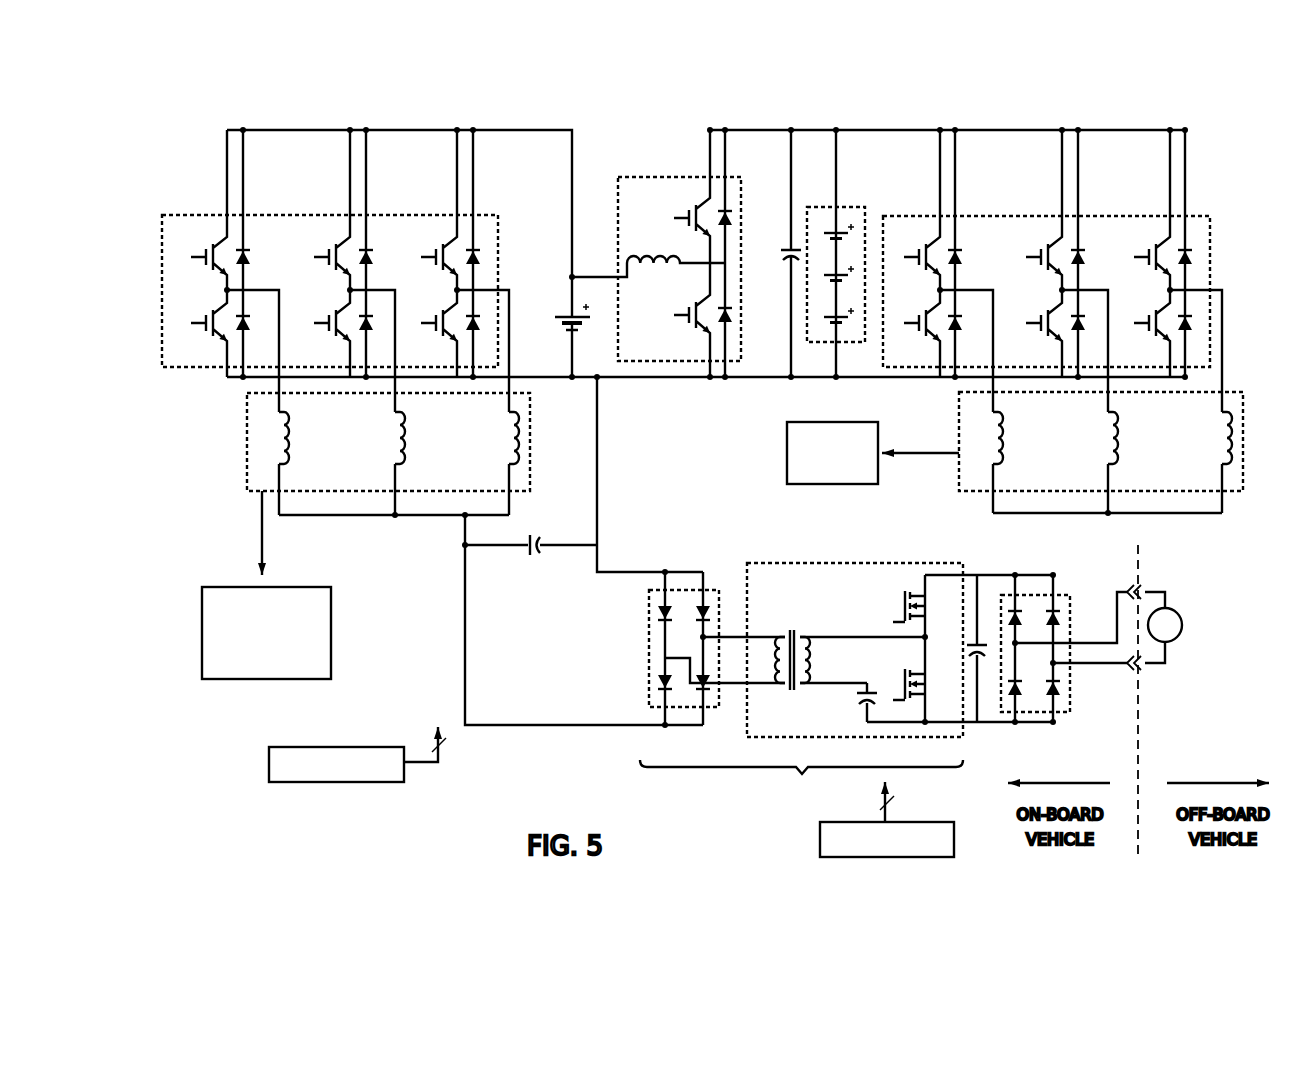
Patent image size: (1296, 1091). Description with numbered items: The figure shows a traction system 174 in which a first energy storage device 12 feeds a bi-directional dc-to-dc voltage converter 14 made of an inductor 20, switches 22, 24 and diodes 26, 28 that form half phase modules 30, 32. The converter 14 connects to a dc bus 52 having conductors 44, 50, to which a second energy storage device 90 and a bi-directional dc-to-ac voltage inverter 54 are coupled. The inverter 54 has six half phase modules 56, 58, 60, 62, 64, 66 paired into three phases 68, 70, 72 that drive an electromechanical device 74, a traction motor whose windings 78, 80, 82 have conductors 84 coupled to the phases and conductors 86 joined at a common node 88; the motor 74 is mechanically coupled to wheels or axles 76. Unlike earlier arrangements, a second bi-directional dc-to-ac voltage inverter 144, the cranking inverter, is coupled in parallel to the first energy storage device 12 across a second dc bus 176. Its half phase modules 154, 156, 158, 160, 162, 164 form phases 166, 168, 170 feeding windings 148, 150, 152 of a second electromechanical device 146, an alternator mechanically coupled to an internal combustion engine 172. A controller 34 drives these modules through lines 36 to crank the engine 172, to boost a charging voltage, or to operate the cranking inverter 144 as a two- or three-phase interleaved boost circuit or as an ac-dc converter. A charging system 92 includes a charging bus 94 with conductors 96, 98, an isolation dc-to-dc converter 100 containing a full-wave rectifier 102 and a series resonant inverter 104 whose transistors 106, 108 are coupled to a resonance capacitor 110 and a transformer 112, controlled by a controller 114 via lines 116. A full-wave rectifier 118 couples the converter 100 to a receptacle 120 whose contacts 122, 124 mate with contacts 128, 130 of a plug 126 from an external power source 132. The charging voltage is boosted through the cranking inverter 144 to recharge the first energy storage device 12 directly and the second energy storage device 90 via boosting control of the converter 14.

The first energy storage device 12 is at (563, 312).
The bi-directional dc-to-dc voltage converter 14 is at (675, 253).
The inductor 20 is at (653, 257).
The switch 22 is at (672, 218).
The switch 24 is at (672, 315).
The diode 26 is at (730, 222).
The diode 28 is at (732, 320).
The half phase module 30 is at (675, 210).
The half phase module 32 is at (674, 329).
The controller 34 is at (269, 765).
The lines 36 is at (423, 764).
The conductor 44 is at (900, 130).
The conductor 50 is at (853, 377).
The dc bus 52 is at (947, 253).
The bi-directional dc-to-ac voltage inverter 54 is at (1046, 269).
The half phase module 56 is at (930, 232).
The half phase module 58 is at (927, 298).
The half phase module 60 is at (1050, 232).
The half phase module 62 is at (1049, 299).
The half phase module 64 is at (1160, 232).
The half phase module 66 is at (1157, 298).
The phase 68 is at (949, 269).
The phase 70 is at (1065, 269).
The phase 72 is at (1175, 269).
The electromechanical device 74 is at (1080, 466).
The driving wheels or axles 76 is at (787, 455).
The winding 78 is at (1002, 445).
The winding 80 is at (1116, 443).
The winding 82 is at (1216, 422).
The conductors 84 is at (997, 410).
The conductors 86 is at (997, 489).
The common node 88 is at (1050, 513).
The second energy storage device 90 is at (830, 207).
The charging system 92 is at (427, 655).
The charging bus 94 is at (470, 530).
The conductor 96 is at (597, 572).
The conductor 98 is at (467, 573).
The isolation dc-to-dc converter 100 is at (839, 669).
The full-wave rectifier 102 is at (649, 598).
The inverter 104 is at (900, 635).
The transistor 106 is at (903, 620).
The transistor 108 is at (893, 695).
The resonance capacitor 110 is at (862, 704).
The transformer 112 is at (804, 635).
The controller 114 is at (954, 842).
The lines 116 is at (896, 803).
The full-wave rectifier 118 is at (1070, 596).
The receptacle 120 is at (1078, 650).
The contact 122 is at (1128, 590).
The contact 124 is at (1129, 668).
The plug or connector 126 is at (1165, 651).
The contact 128 is at (1147, 590).
The contact 130 is at (1147, 667).
The external power source 132 is at (1183, 620).
The second bi-directional dc-to-ac voltage inverter 144 is at (334, 269).
The second electromechanical device 146 is at (364, 455).
The winding 148 is at (286, 456).
The winding 150 is at (402, 446).
The winding 152 is at (505, 426).
The half phase module 154 is at (218, 232).
The half phase module 156 is at (214, 298).
The half phase module 158 is at (338, 232).
The half phase module 160 is at (337, 299).
The half phase module 162 is at (446, 232).
The half phase module 164 is at (444, 298).
The phase 166 is at (235, 269).
The phase 168 is at (350, 269).
The phase 170 is at (460, 269).
The internal combustion engine 172 is at (331, 633).
The traction system 174 is at (662, 80).
The second dc bus 176 is at (520, 130).